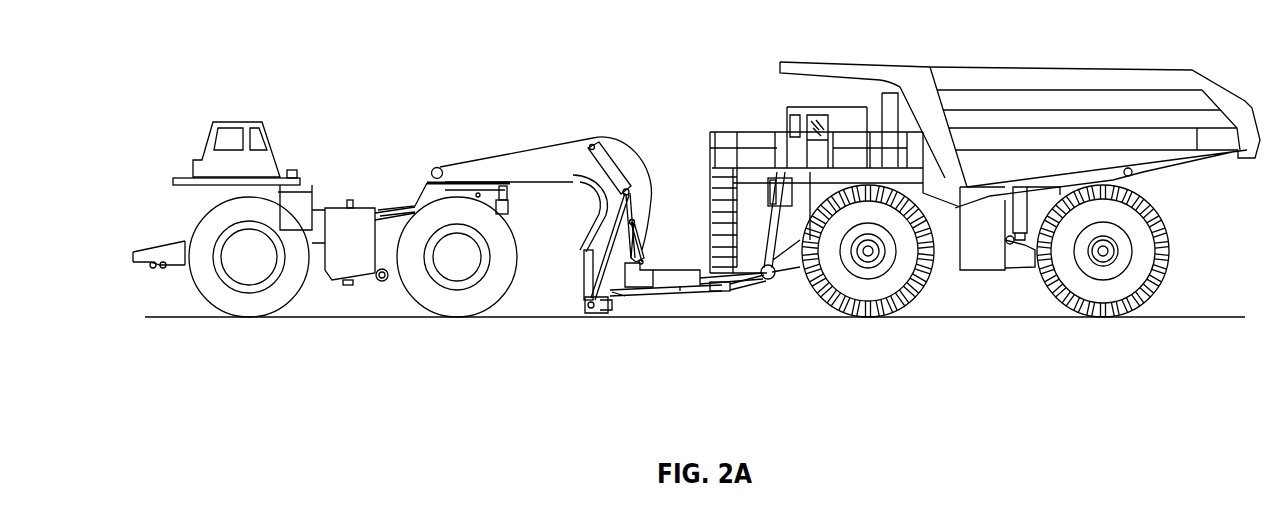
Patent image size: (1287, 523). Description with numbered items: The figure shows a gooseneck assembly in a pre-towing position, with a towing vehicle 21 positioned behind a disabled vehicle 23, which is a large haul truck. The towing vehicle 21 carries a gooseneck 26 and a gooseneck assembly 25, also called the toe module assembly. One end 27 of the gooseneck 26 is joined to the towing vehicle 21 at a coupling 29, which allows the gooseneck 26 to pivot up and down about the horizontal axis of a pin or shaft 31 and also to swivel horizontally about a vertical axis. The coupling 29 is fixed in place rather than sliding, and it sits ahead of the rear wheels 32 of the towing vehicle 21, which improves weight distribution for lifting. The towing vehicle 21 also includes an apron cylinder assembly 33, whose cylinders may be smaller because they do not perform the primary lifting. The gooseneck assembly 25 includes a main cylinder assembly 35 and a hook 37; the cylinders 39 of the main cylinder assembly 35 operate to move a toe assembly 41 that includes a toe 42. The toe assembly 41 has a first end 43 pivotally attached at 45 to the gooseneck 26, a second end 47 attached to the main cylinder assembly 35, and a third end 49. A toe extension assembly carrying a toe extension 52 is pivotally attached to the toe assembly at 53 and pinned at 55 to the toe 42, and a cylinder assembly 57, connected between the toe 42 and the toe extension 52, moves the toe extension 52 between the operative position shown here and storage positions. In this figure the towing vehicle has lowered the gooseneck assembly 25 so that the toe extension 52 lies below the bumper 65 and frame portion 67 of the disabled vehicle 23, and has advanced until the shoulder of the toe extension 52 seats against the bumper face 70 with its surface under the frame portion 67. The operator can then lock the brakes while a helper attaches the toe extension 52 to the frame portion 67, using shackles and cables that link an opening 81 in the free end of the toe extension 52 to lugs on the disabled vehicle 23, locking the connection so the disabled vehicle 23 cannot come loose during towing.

The towing vehicle 21 is at (302, 92).
The disabled vehicle 23 is at (1037, 40).
The gooseneck assembly 25 is at (570, 102).
The gooseneck 26 is at (537, 163).
The end of the gooseneck 27 is at (477, 165).
The coupling 29 is at (424, 141).
The pin or shaft 31 is at (427, 172).
The rear wheels 32 is at (395, 302).
The apron cylinder assembly 33 is at (525, 206).
The main cylinder assembly 35 is at (624, 153).
The hook 37 is at (600, 315).
The cylinders 39 is at (627, 146).
The toe assembly 41 is at (624, 306).
The toe 42 is at (620, 225).
The first end 43 is at (593, 287).
The pivotal attachment 45 is at (588, 312).
The second end 47 is at (637, 203).
The third end 49 is at (637, 292).
The toe extension 52 is at (693, 292).
The pivotal attachment 53 is at (640, 252).
The pin 55 is at (620, 300).
The cylinder assembly 57 is at (637, 228).
The bumper 65 is at (715, 286).
The frame portion 67 is at (774, 280).
The bumper face 70 is at (690, 290).
The opening 81 is at (732, 287).